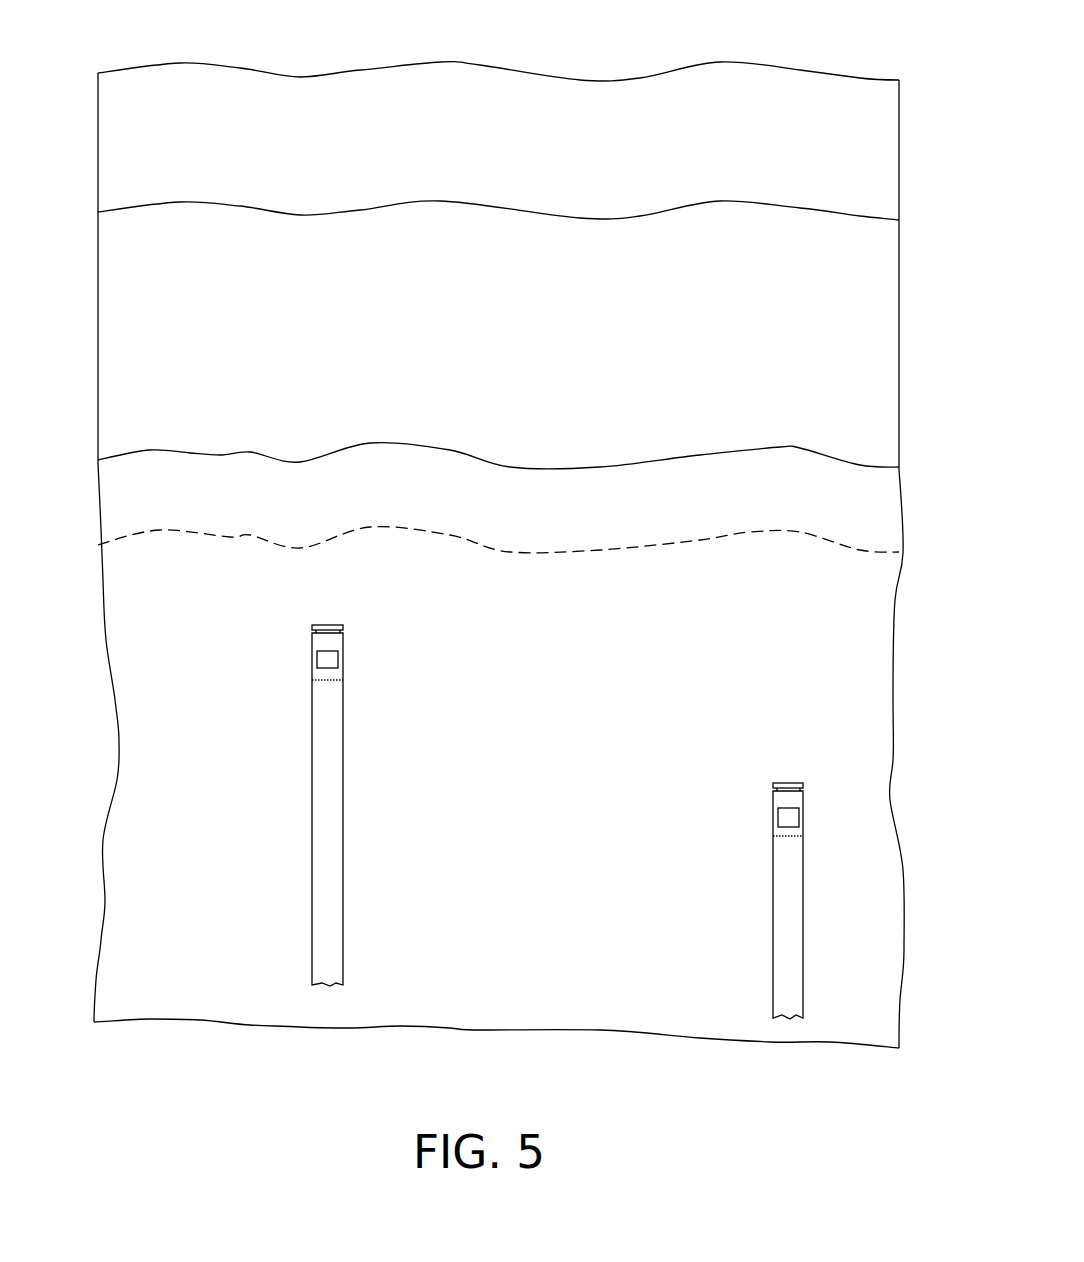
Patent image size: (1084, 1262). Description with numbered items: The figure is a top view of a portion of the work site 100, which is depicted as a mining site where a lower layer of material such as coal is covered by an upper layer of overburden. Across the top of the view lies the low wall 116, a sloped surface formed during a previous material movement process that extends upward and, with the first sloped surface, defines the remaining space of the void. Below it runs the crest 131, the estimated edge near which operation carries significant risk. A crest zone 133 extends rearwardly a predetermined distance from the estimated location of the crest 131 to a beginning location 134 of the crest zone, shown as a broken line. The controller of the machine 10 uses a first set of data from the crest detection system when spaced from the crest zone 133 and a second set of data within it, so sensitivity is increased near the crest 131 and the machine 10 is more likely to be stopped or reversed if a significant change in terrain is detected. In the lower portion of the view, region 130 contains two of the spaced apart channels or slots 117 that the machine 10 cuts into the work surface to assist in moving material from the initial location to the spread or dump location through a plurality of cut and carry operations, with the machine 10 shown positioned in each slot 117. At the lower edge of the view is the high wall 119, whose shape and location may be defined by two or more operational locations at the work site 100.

The work site 100 is at (76, 98).
The low wall 116 is at (868, 145).
The crest 131 is at (244, 450).
The crest zone 133 is at (166, 481).
The beginning location of the crest zone 134 is at (750, 532).
The lower formation 130 is at (152, 597).
The high wall 119 is at (833, 1040).
The slots 117 is at (326, 818).
The machine 10 is at (321, 673).